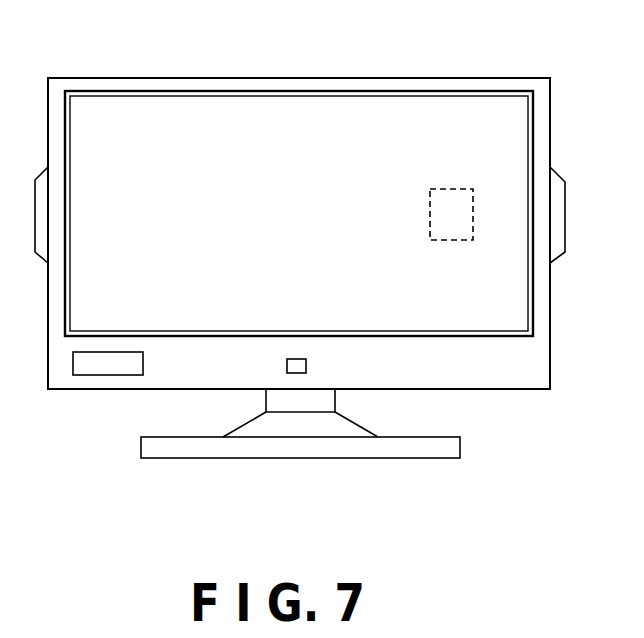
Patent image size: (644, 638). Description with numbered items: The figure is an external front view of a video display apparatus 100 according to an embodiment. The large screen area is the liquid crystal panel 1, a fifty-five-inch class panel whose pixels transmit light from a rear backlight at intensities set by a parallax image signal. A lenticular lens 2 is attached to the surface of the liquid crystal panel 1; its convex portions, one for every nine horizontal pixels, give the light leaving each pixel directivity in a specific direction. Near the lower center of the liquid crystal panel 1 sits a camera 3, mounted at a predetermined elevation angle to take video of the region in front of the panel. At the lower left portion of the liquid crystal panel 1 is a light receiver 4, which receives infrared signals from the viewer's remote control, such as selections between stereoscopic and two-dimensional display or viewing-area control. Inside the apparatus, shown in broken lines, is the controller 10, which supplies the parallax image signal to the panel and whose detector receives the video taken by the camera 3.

The liquid crystal panel 1 is at (216, 91).
The lenticular lens 2 is at (353, 128).
The camera 3 is at (303, 365).
The light receiver 4 is at (95, 362).
The controller 10 is at (445, 214).
The video display apparatus 100 is at (314, 519).